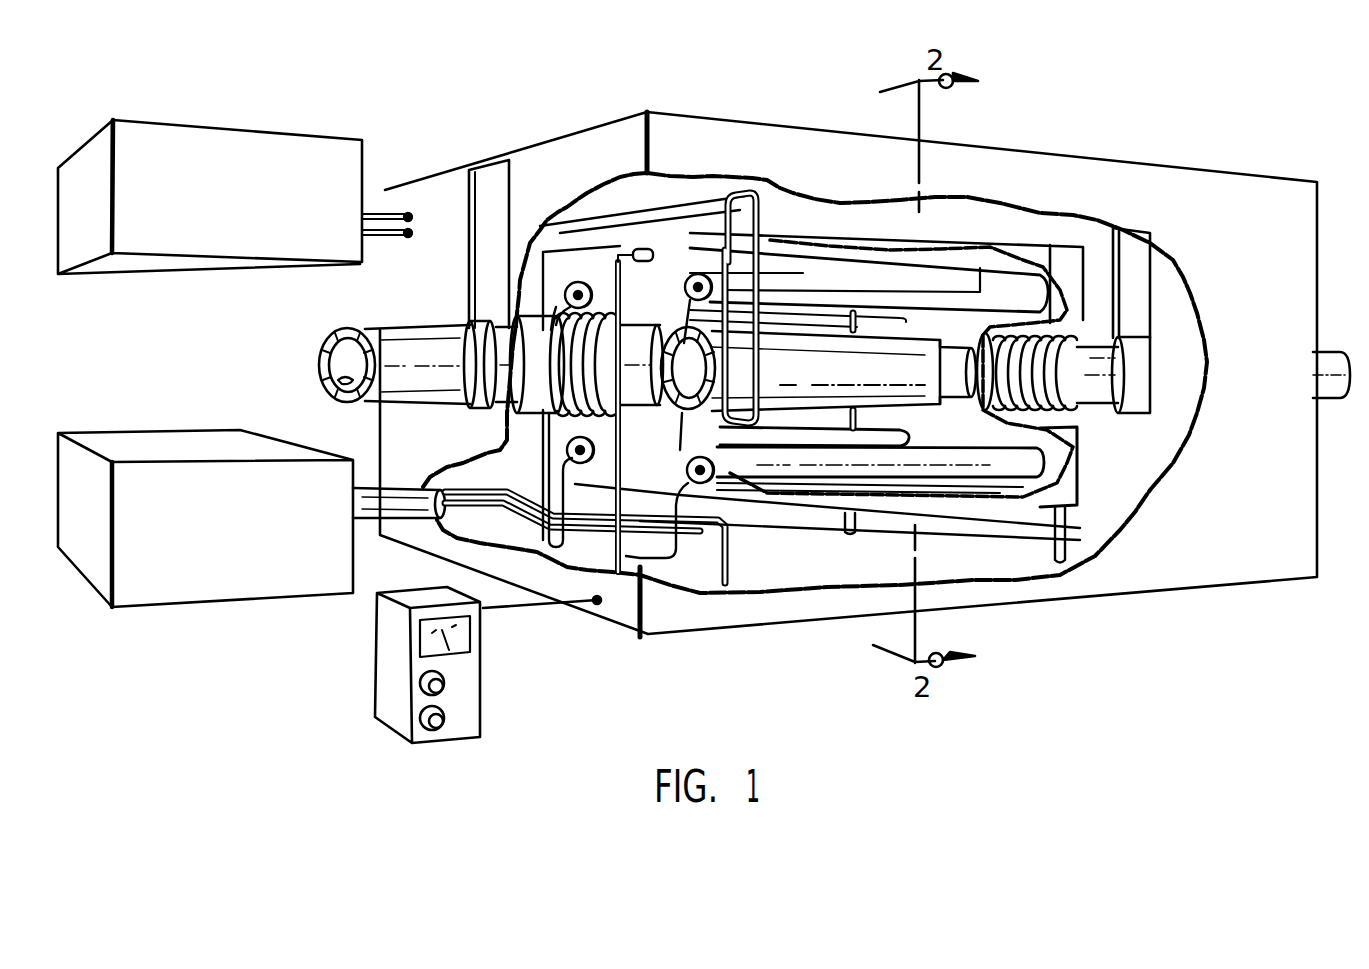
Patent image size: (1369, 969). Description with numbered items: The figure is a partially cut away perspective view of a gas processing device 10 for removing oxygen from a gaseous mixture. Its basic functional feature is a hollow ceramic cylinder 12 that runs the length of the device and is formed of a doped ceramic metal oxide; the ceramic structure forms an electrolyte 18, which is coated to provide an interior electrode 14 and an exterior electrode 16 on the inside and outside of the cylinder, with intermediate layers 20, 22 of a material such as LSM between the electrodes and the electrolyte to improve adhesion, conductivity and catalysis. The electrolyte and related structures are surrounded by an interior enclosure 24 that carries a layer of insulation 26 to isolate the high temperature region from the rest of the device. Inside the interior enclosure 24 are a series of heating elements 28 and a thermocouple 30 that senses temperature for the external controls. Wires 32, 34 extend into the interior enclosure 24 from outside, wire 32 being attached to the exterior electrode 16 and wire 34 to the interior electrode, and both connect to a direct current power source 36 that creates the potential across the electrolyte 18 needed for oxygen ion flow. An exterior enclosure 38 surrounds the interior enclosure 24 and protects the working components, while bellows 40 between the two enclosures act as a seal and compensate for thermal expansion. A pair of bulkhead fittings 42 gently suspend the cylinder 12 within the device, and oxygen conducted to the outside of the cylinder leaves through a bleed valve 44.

The gas processing device 10 is at (1174, 148).
The hollow cylinder 12 is at (380, 332).
The interior electrode 14 is at (336, 382).
The exterior electrode 16 is at (782, 368).
The electrolyte 18 is at (318, 357).
The intermediate layer 20 is at (357, 388).
The intermediate layer 22 is at (733, 470).
The interior enclosure 24 is at (1063, 493).
The insulation 26 is at (1045, 263).
The heating elements 28 is at (807, 298).
The thermocouple 30 is at (885, 268).
The wire 32 is at (373, 212).
The wire 34 is at (392, 237).
The direct current power source 36 is at (248, 198).
The exterior enclosure 38 is at (700, 147).
The bellows 40 is at (551, 305).
The bulkhead fittings 42 is at (1137, 370).
The bleed valve 44 is at (1140, 293).